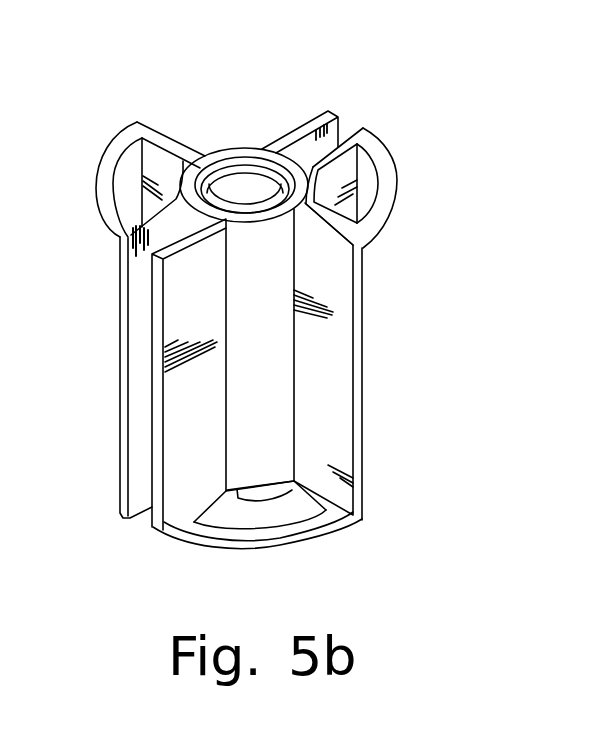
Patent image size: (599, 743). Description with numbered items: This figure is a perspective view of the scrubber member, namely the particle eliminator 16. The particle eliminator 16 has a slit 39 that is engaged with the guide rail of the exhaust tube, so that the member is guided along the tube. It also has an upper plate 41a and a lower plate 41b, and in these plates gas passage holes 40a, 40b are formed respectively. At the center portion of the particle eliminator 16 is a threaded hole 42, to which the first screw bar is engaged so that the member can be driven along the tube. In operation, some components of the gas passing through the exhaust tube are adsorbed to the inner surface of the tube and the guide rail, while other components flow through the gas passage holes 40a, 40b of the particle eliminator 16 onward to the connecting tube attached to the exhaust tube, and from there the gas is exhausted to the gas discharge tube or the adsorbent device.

The particle eliminator 16 is at (414, 112).
The slit 39 is at (147, 513).
The gas passage hole 40a is at (160, 168).
The gas passage hole 40b is at (267, 518).
The upper plate 41a is at (397, 173).
The lower plate 41b is at (342, 527).
The threaded hole 42 is at (253, 184).